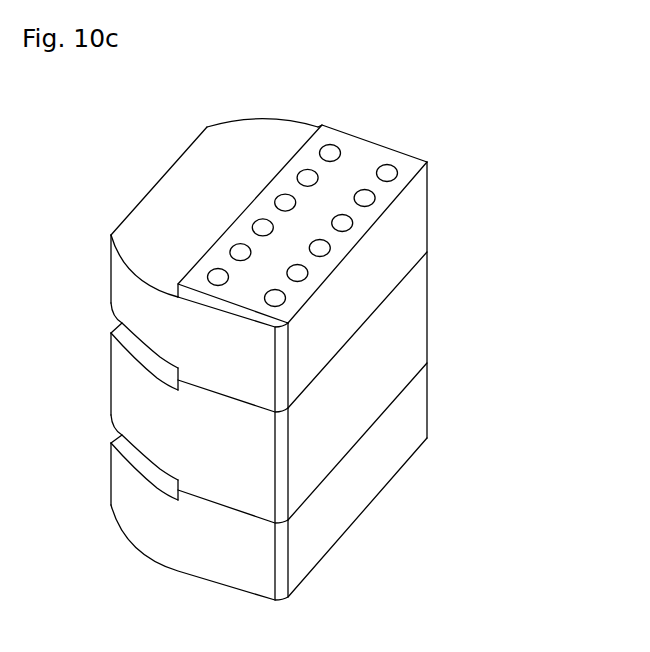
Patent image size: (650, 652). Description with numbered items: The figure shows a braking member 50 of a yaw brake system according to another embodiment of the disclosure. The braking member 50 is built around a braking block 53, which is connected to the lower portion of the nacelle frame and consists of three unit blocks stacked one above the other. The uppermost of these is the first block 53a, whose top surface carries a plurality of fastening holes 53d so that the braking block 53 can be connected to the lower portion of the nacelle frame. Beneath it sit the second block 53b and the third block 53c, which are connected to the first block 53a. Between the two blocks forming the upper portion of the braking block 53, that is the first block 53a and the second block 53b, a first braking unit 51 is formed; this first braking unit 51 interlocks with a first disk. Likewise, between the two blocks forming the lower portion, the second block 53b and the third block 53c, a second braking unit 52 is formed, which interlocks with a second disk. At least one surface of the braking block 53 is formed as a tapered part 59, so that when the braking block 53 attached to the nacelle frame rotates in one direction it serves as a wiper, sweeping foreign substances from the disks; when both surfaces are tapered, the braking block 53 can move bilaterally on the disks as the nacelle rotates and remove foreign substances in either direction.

The braking member 50 is at (128, 162).
The braking block 53 is at (510, 242).
The first block 53a is at (407, 233).
The second block 53b is at (407, 328).
The third block 53c is at (407, 420).
The fastening holes 53d is at (387, 172).
The tapered part 59 is at (130, 288).
The first braking unit 51 is at (108, 314).
The second braking unit 52 is at (108, 426).